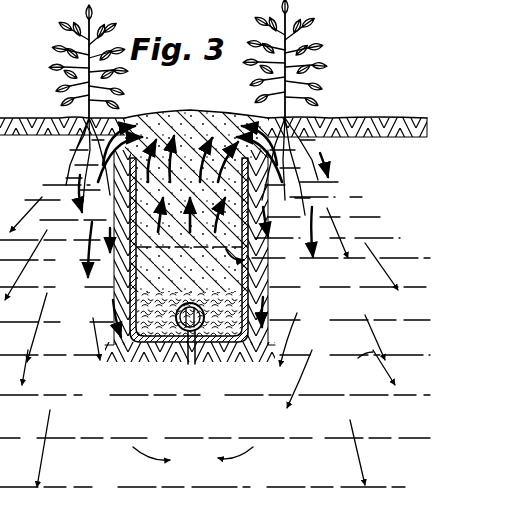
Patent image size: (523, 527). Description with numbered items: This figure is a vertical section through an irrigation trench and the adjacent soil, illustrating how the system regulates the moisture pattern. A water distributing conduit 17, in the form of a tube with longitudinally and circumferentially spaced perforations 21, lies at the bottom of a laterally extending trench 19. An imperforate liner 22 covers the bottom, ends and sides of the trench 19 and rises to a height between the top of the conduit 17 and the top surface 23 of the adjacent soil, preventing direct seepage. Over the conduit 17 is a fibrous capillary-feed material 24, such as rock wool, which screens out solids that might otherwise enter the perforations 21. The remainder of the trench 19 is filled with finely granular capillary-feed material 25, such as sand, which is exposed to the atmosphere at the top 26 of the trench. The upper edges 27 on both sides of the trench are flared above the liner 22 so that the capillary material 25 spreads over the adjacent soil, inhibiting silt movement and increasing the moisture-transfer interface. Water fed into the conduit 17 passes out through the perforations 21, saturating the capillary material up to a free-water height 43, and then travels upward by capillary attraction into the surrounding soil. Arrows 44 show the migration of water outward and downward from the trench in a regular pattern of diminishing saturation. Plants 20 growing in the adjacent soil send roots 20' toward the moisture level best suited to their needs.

The water distributing conduit 17 is at (180, 334).
The trench 19 is at (220, 352).
The plants 20 is at (189, 59).
The roots 20' is at (197, 166).
The perforations 21 is at (194, 361).
The imperforate liner 22 is at (125, 272).
The top surface 23 is at (63, 118).
The fibrous capillary-feed material 24 is at (264, 301).
The granular capillary-feed material 25 is at (118, 200).
The top of the trench 26 is at (188, 110).
The flared upper edges 27 is at (129, 120).
The free-water height 43 is at (258, 262).
The arrows 44 is at (298, 385).